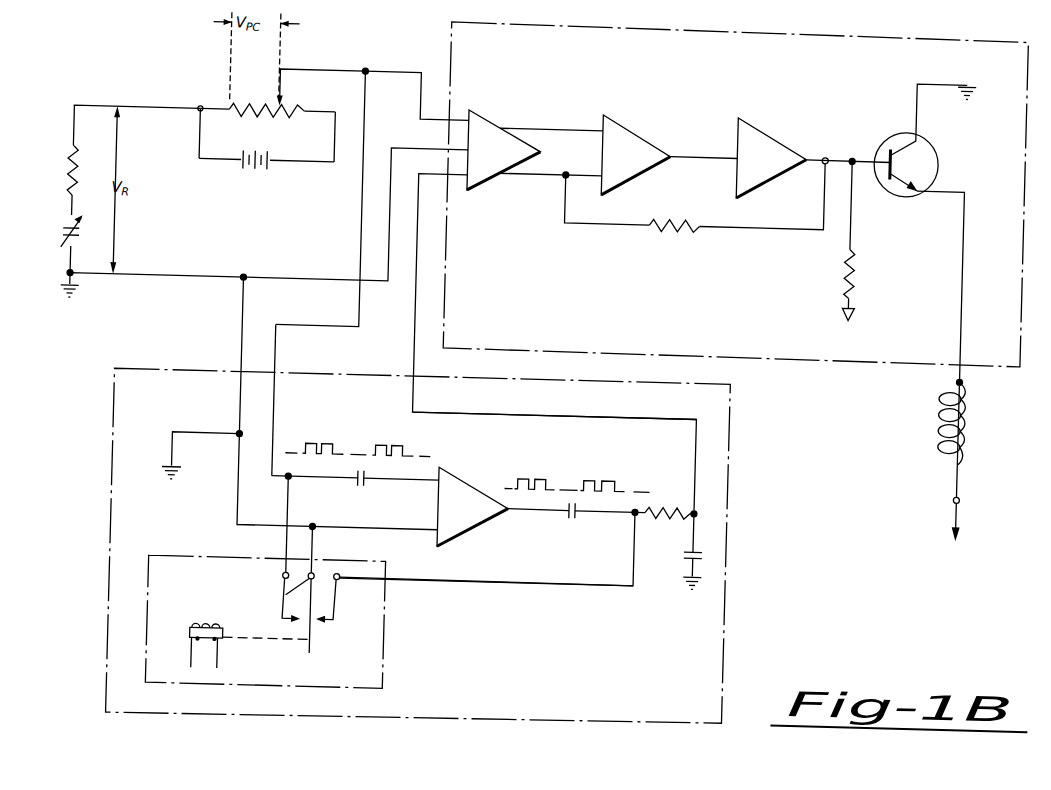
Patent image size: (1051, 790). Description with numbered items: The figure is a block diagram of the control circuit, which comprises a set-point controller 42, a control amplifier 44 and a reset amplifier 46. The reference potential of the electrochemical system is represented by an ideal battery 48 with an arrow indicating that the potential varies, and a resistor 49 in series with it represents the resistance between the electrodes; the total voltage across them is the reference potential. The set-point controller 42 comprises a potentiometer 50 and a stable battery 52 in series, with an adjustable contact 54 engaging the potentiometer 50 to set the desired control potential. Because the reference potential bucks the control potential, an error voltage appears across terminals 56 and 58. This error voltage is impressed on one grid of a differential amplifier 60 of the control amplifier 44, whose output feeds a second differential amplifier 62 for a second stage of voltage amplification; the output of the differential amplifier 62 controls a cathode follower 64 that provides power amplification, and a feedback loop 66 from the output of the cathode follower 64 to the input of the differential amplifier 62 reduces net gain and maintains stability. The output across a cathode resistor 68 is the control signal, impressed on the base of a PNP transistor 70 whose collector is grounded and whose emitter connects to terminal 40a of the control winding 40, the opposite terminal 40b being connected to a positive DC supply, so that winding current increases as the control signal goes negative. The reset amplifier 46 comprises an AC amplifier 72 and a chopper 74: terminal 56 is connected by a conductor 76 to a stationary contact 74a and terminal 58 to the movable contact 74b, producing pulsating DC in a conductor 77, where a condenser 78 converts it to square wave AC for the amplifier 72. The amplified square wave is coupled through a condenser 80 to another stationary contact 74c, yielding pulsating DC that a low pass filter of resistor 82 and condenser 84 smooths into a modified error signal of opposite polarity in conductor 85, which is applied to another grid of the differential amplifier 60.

The control winding 40 is at (972, 416).
The terminal 40a is at (956, 371).
The terminal 40b is at (962, 489).
The set-point controller 42 is at (260, 123).
The control amplifier 44 is at (756, 26).
The reset amplifier 46 is at (104, 429).
The ideal battery 48 is at (57, 248).
The resistor 49 is at (66, 180).
The potentiometer 50 is at (306, 112).
The battery 52 is at (258, 176).
The adjustable contact 54 is at (270, 82).
The terminal 56 is at (358, 72).
The terminal 58 is at (240, 282).
The differential amplifier 60 is at (477, 124).
The second differential amplifier 62 is at (609, 127).
The cathode follower 64 is at (752, 128).
The feedback loop 66 is at (703, 227).
The cathode resistor 68 is at (856, 254).
The PNP transistor 70 is at (886, 122).
The AC amplifier 72 is at (460, 489).
The chopper 74 is at (390, 584).
The stationary contact 74a is at (287, 582).
The movable contact 74b is at (291, 601).
The stationary contact 74c is at (346, 588).
The conductor 76 is at (275, 422).
The conductor 77 is at (313, 488).
The condenser 78 is at (360, 488).
The condenser 80 is at (573, 520).
The resistor 82 is at (674, 520).
The condenser 84 is at (688, 556).
The conductor 85 is at (671, 418).